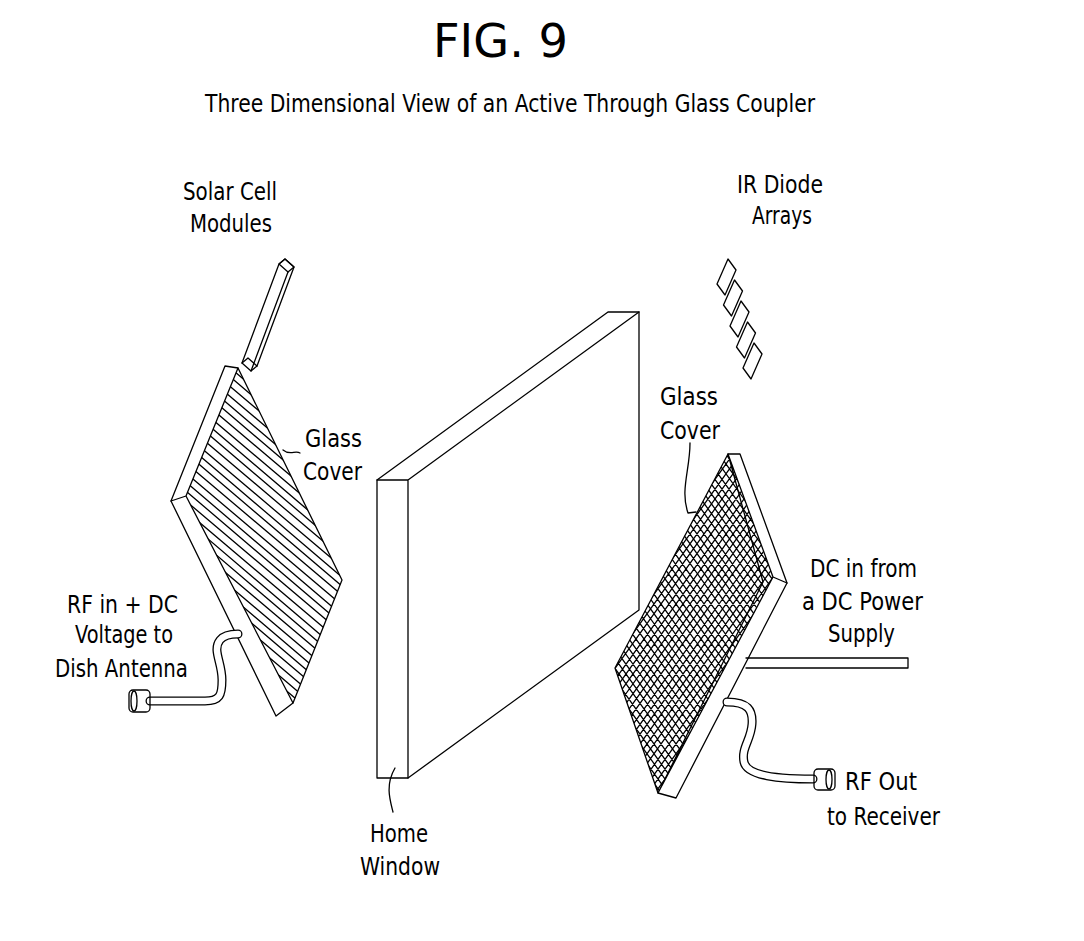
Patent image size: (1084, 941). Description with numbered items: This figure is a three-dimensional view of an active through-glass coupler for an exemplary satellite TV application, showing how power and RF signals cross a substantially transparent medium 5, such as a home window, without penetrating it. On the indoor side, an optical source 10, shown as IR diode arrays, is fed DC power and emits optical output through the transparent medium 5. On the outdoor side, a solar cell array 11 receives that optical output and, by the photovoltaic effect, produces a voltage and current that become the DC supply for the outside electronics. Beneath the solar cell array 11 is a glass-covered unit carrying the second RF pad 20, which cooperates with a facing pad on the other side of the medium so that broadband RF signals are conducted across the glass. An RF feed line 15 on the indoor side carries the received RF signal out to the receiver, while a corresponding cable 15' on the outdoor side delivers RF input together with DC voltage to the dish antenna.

The substantially transparent medium 5 is at (492, 408).
The optical source 10 is at (730, 268).
The solar cell array 11 is at (258, 317).
The RF feed line 15 is at (781, 766).
The RF in and DC voltage cable to dish antenna 15' is at (183, 710).
The second RF pad 20 is at (280, 714).